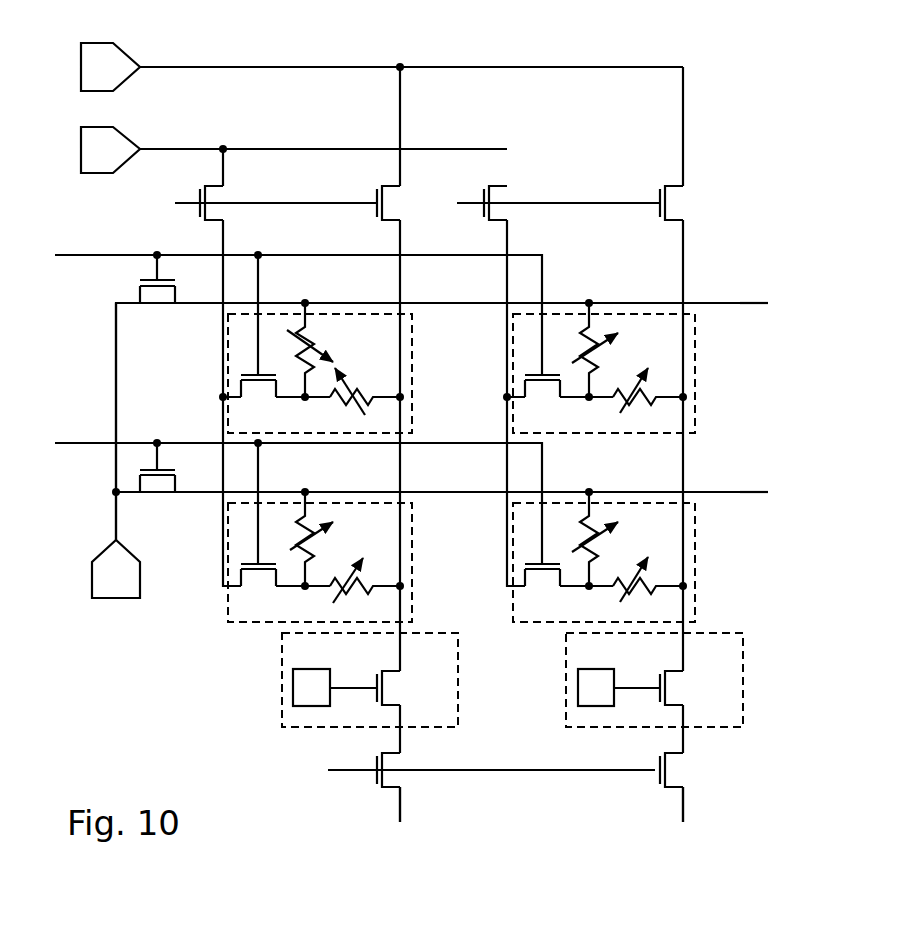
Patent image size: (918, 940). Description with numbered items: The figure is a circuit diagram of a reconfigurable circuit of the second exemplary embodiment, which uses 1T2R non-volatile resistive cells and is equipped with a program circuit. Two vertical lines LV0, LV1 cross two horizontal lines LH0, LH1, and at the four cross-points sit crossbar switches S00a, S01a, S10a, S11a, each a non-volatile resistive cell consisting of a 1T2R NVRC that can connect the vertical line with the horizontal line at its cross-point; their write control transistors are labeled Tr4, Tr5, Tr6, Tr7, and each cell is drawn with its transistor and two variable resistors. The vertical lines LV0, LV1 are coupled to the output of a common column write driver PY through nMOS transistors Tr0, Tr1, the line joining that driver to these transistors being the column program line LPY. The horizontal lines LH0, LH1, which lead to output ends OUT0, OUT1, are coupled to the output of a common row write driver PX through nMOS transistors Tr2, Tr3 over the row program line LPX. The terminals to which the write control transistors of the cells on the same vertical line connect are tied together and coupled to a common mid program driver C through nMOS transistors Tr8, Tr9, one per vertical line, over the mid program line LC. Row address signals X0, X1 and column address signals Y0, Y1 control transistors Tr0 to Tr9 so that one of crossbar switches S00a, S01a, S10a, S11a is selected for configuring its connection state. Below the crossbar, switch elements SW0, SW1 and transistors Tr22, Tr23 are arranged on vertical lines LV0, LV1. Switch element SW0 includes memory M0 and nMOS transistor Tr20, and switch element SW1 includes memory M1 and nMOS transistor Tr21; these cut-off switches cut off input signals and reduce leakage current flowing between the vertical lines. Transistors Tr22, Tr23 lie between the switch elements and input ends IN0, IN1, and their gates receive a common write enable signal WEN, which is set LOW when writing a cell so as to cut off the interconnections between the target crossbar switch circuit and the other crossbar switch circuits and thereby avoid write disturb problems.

The common column write driver PY is at (382, 67).
The common mid program driver C is at (294, 150).
The common row write driver PX is at (116, 450).
The column program line LPY is at (458, 110).
The mid program line LC is at (264, 152).
The vertical line LV0 is at (421, 521).
The vertical line LV1 is at (704, 444).
The horizontal line LH0 is at (442, 291).
The horizontal line LH1 is at (442, 479).
The row program line LPX is at (93, 421).
The output end OUT0 is at (800, 301).
The output end OUT1 is at (800, 491).
The row address signal X0 is at (257, 205).
The row address signal X1 is at (540, 205).
The column address signal Y0 is at (279, 309).
The column address signal Y1 is at (279, 497).
The common write enable signal WEN is at (460, 775).
The input end IN0 is at (405, 825).
The input end IN1 is at (697, 825).
The nMOS transistor Tr0 is at (367, 197).
The nMOS transistor Tr1 is at (652, 198).
The nMOS transistor Tr2 is at (158, 297).
The nMOS transistor Tr3 is at (157, 486).
The write control transistor Tr4 is at (258, 341).
The write control transistor Tr5 is at (542, 400).
The write control transistor Tr6 is at (258, 530).
The write control transistor Tr7 is at (542, 591).
The nMOS transistor Tr8 is at (231, 197).
The nMOS transistor Tr9 is at (516, 198).
The nMOS transistor Tr20 is at (410, 688).
The nMOS transistor Tr21 is at (698, 688).
The transistor Tr22 is at (416, 779).
The transistor Tr23 is at (698, 779).
The crossbar switch S00a is at (356, 368).
The crossbar switch S01a is at (640, 368).
The crossbar switch S10a is at (359, 557).
The crossbar switch S11a is at (643, 557).
The switch element SW0 is at (335, 680).
The switch element SW1 is at (621, 680).
The memory M0 is at (335, 676).
The memory M1 is at (619, 676).